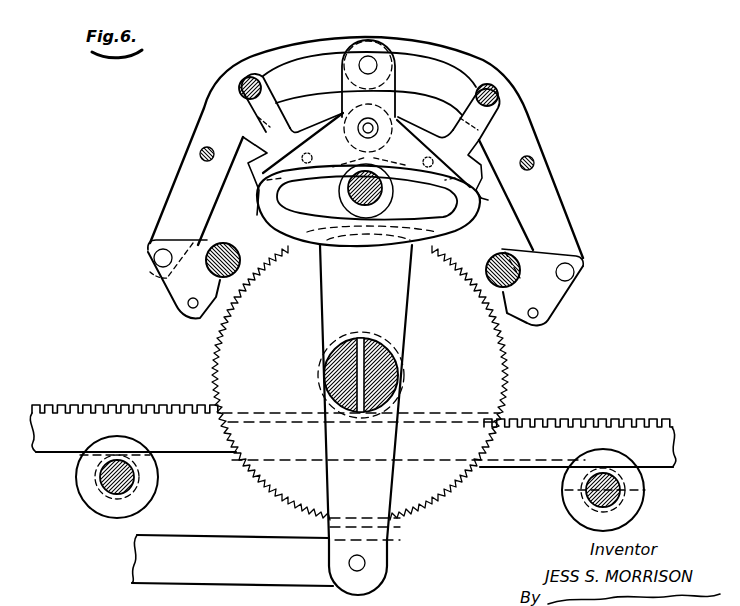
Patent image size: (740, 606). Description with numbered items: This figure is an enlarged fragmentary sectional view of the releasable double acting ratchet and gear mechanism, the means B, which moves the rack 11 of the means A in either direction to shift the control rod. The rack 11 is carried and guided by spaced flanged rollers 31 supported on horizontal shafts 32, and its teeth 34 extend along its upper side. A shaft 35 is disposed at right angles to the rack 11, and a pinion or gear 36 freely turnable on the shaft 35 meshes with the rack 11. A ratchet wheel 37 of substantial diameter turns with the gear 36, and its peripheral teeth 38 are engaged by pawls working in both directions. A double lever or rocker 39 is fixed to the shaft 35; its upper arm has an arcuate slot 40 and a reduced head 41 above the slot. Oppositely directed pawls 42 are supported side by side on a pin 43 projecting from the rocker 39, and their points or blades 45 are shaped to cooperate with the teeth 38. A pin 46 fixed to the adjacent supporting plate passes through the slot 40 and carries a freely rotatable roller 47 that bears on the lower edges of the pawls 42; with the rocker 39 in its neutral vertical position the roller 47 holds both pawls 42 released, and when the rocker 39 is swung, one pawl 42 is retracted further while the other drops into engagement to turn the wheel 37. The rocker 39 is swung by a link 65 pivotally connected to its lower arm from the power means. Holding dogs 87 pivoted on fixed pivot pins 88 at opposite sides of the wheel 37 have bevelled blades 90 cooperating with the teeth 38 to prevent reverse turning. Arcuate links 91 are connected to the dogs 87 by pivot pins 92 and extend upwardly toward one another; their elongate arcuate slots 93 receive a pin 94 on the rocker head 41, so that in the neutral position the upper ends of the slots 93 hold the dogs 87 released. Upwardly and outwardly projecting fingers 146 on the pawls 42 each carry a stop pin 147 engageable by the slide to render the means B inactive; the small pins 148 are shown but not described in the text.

The rack 11 is at (540, 420).
The flanged rollers 31 is at (145, 484).
The horizontal shafts 32 is at (124, 490).
The rack teeth 34 is at (168, 410).
The shaft 35 is at (375, 377).
The pinion or gear 36 is at (394, 348).
The ratchet wheel 37 is at (377, 393).
The peripheral teeth 38 is at (483, 298).
The double lever or rocker 39 is at (366, 420).
The arcuate slot 40 is at (460, 213).
The reduced head 41 is at (398, 100).
The dogs or pawls 42 is at (255, 148).
The pin 43 is at (378, 132).
The points or blades 45 is at (487, 199).
The pin 46 is at (383, 200).
The roller 47 is at (344, 191).
The link 65 is at (232, 560).
The holding dogs 87 is at (172, 298).
The fixed pivot pins 88 is at (232, 245).
The bevelled teeth or blades 90 is at (244, 286).
The angular or arcuate links 91 is at (187, 180).
The pivot pins 92 is at (154, 258).
The elongate arcuate slots 93 is at (305, 62).
The pin 94 is at (374, 60).
The fingers 146 is at (490, 118).
The stop pins 147 is at (500, 97).
The pin 148 is at (200, 155).
The means A is at (130, 405).
The means B is at (506, 62).